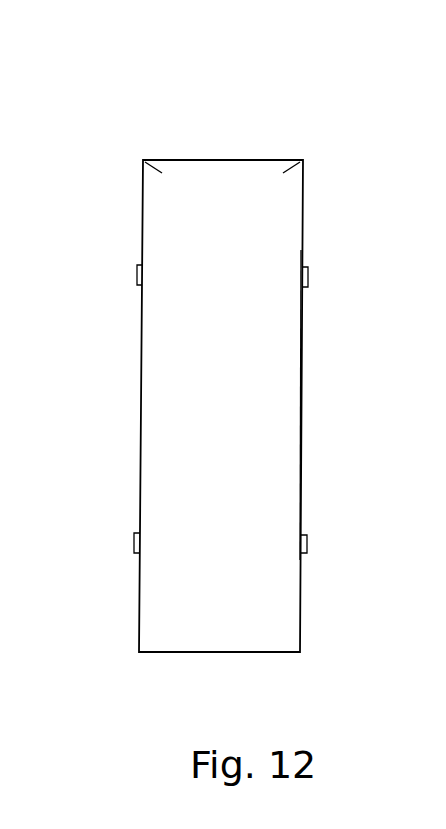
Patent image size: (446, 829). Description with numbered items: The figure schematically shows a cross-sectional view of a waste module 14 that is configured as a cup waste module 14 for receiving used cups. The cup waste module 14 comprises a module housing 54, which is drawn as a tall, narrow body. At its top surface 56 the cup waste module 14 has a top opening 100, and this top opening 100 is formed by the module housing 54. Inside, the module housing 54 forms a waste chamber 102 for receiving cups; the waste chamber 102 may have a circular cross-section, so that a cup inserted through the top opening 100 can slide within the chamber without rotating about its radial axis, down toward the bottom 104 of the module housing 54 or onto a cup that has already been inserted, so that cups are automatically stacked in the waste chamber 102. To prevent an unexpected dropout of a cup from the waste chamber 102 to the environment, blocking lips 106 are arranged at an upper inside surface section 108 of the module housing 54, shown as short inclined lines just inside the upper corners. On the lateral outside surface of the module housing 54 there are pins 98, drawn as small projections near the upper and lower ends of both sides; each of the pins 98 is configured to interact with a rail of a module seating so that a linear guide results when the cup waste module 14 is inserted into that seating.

The cup waste module 14 is at (357, 116).
The module housing 54 is at (311, 220).
The top surface 56 is at (214, 120).
The pins 98 is at (134, 276).
The top opening 100 is at (246, 157).
The waste chamber 102 is at (276, 390).
The bottom 104 is at (212, 656).
The blocking lips 106 is at (154, 181).
The upper inside surface section 108 is at (291, 182).